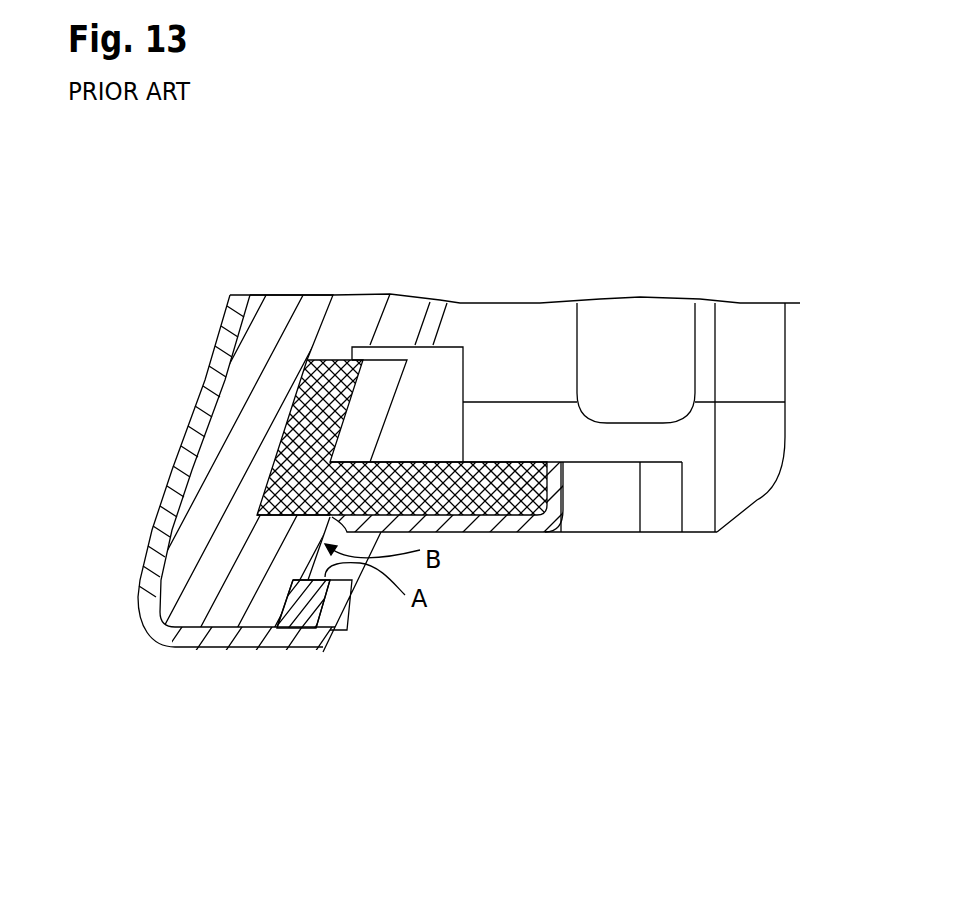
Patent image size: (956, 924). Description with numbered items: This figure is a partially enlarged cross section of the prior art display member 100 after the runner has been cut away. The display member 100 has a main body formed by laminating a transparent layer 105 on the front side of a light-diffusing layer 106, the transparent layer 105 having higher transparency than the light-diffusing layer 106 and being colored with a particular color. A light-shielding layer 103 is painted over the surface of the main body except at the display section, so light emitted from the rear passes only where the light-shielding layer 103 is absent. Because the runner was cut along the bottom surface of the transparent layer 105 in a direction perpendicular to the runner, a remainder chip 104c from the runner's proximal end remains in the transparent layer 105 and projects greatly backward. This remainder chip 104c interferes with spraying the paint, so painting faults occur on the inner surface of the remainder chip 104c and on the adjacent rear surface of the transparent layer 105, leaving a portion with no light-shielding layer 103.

The display member 100 is at (674, 223).
The light-shielding layer 103 is at (530, 533).
The remainder chip 104c is at (322, 650).
The transparent layer 105 is at (276, 330).
The light-diffusing layer 106 is at (337, 360).